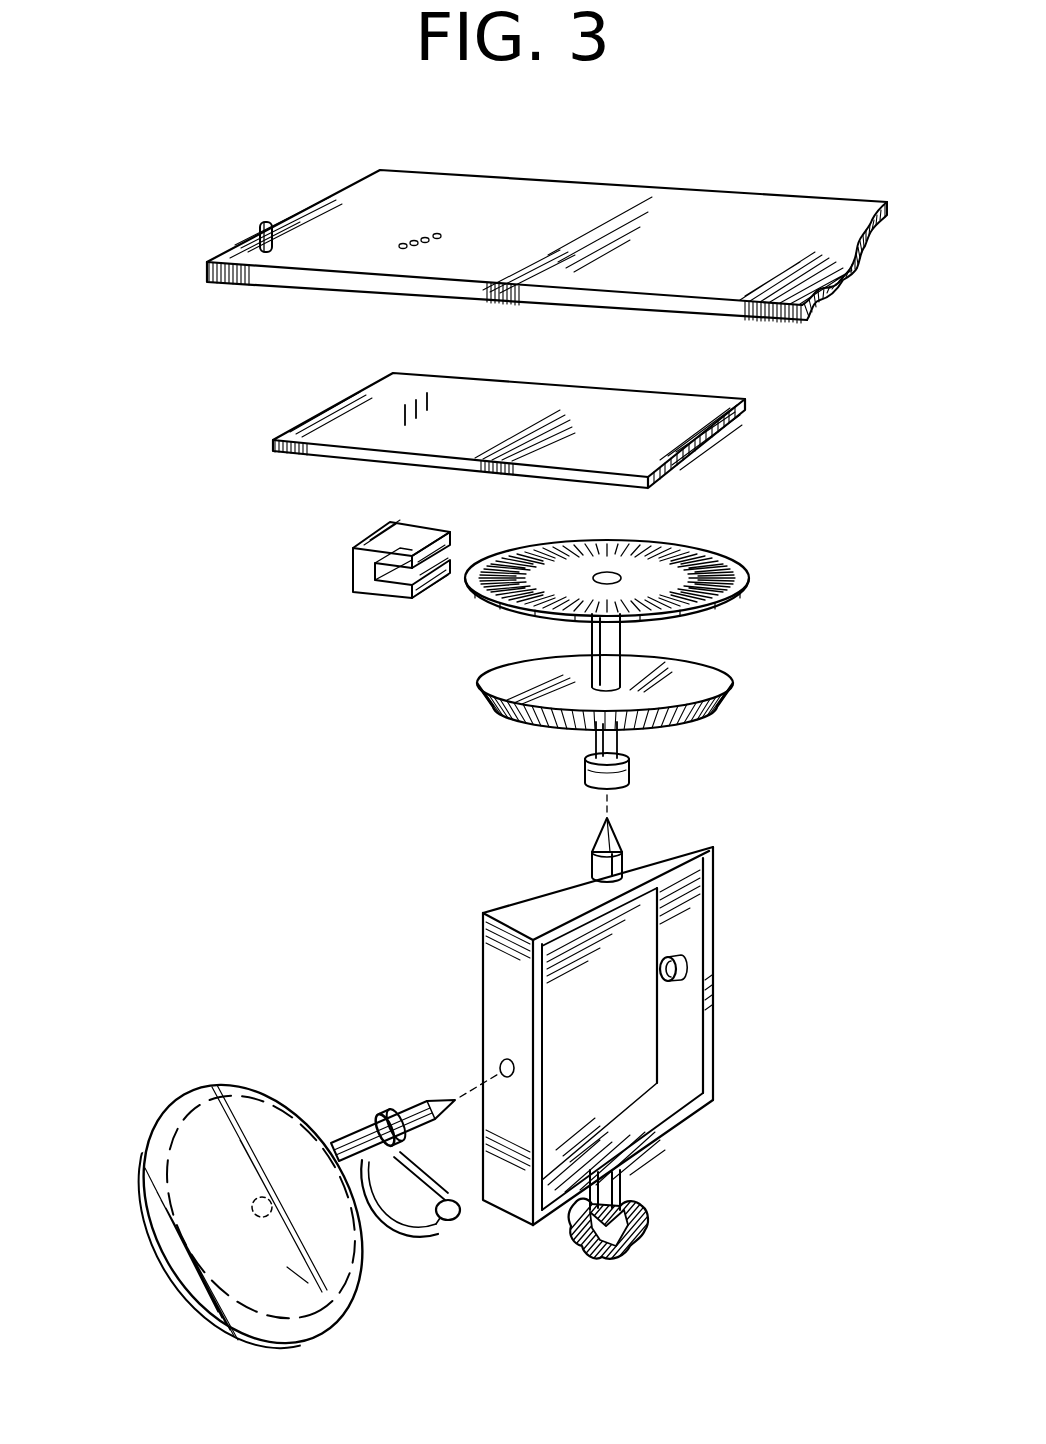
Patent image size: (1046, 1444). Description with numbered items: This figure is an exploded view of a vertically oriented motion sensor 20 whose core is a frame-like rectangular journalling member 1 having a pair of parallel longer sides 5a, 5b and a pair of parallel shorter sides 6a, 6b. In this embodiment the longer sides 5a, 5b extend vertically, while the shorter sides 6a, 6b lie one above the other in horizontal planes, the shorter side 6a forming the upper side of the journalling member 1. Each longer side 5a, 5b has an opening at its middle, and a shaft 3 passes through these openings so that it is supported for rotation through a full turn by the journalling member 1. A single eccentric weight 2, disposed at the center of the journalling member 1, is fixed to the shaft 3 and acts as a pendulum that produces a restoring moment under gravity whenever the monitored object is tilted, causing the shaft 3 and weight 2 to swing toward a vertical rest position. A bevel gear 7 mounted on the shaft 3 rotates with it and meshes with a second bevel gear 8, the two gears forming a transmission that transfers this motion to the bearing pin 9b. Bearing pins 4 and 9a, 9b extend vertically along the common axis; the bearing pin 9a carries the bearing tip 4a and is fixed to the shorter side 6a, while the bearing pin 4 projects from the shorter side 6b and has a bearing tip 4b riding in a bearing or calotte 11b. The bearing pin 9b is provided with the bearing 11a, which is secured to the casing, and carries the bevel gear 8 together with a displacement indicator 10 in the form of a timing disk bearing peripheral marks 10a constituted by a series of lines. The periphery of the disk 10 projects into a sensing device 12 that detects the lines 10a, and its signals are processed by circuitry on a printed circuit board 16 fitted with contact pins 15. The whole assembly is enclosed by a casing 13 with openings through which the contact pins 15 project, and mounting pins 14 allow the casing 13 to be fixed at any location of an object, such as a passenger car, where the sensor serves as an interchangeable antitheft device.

The journalling member 1 is at (600, 1071).
The eccentric weight 2 is at (393, 1240).
The shaft 3 is at (348, 1152).
The bearing pin 4 is at (622, 1190).
The bearing tip 4a is at (618, 828).
The bearing tip 4b is at (622, 1250).
The longer side 5a is at (509, 1195).
The longer side 5b is at (700, 1052).
The shorter side 6a is at (512, 916).
The shorter side 6b is at (680, 1110).
The bevel gear 7 is at (162, 1238).
The second bevel gear 8 is at (730, 682).
The bearing pin 9a is at (606, 823).
The bearing pin 9b is at (591, 630).
The displacement indicator 10 is at (637, 570).
The marks 10a is at (720, 575).
The bearing 11a is at (585, 772).
The bearing 11b is at (630, 1246).
The sensing device 12 is at (380, 548).
The casing 13 is at (697, 200).
The mounting pins 14 is at (260, 236).
The contact pins 15 is at (437, 398).
The printed circuit board 16 is at (683, 410).
The motion sensor 20 is at (390, 693).